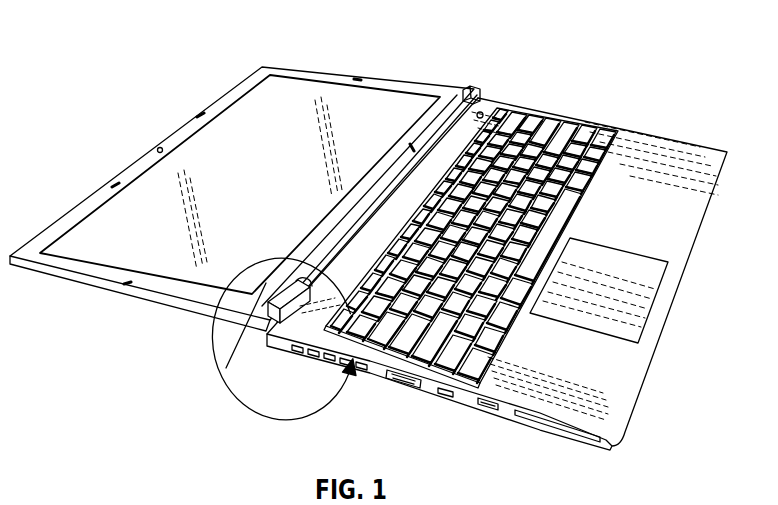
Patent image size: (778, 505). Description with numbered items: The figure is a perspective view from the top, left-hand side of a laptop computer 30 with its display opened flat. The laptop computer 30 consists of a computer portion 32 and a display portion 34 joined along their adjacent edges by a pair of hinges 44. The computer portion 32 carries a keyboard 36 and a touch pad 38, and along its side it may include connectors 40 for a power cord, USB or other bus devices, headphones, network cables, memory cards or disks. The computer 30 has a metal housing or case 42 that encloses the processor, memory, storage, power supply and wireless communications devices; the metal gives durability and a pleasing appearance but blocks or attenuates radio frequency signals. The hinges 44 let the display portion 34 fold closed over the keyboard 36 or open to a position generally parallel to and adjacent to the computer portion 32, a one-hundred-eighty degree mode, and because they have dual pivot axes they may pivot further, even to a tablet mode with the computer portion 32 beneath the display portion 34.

The laptop computer 30 is at (469, 68).
The computer portion 32 is at (665, 135).
The display portion 34 is at (298, 88).
The keyboard 36 is at (588, 127).
The touch pad 38 is at (652, 277).
The connectors 40 is at (483, 409).
The housing or case 42 is at (630, 382).
The hinges 44 is at (462, 92).